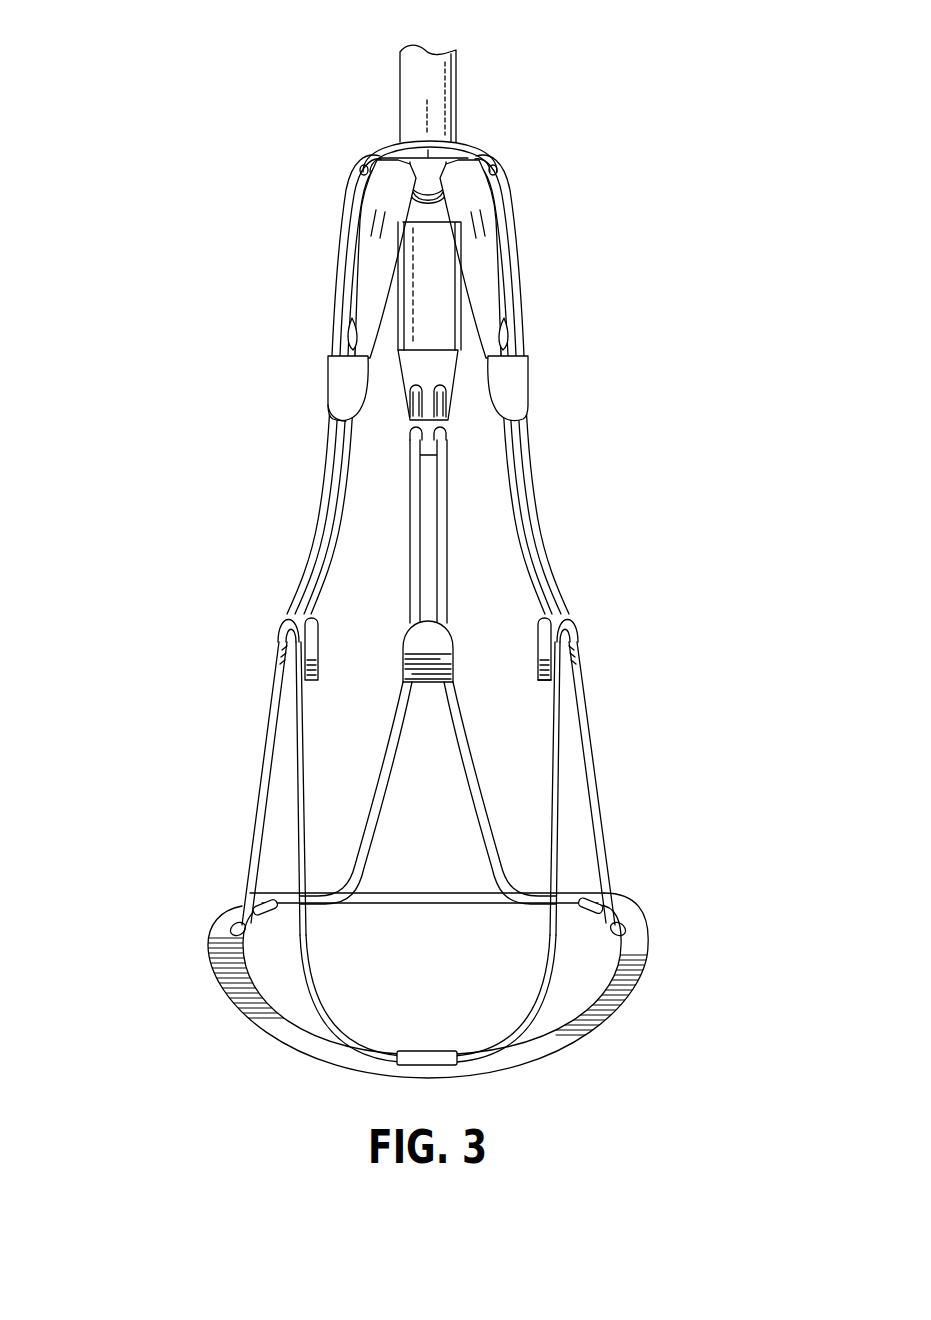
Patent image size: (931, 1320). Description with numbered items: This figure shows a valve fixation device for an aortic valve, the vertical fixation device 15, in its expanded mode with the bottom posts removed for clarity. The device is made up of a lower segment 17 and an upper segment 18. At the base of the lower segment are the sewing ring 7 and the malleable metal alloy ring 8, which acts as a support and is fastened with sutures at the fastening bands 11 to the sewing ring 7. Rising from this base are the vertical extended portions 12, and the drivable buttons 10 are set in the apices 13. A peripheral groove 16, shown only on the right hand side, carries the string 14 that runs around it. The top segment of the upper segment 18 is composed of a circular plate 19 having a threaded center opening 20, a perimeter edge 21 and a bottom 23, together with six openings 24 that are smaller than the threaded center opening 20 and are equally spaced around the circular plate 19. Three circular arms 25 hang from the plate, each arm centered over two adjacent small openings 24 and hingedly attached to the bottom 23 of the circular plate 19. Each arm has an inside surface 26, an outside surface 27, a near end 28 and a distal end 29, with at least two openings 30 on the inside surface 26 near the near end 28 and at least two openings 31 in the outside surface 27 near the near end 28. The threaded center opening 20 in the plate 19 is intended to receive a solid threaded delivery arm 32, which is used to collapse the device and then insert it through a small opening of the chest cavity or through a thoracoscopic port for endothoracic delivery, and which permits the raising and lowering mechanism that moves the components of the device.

The sewing ring 7 is at (605, 985).
The malleable metal alloy ring 8 is at (593, 807).
The drivable buttons 10 is at (402, 645).
The fastening bands 11 is at (260, 907).
The vertical extended portions 12 is at (262, 766).
The apices 13 is at (285, 620).
The string 14 is at (542, 528).
The vertical fixation device 15 is at (192, 250).
The peripheral groove 16 is at (542, 677).
The lower segment 17 is at (702, 772).
The upper segment 18 is at (640, 360).
The circular plate 19 is at (484, 156).
The threaded center opening 20 is at (420, 207).
The perimeter edge 21 is at (474, 150).
The bottom 23 is at (422, 192).
The six openings 24 is at (384, 152).
The circular arms 25 is at (327, 378).
The inside surface 26 is at (451, 341).
The outside surface 27 is at (397, 211).
The near end 28 is at (330, 410).
The distal end 29 is at (407, 153).
The openings on inside surface 30 is at (410, 405).
The openings in outside surface 31 is at (348, 347).
The threaded delivery arm 32 is at (457, 78).